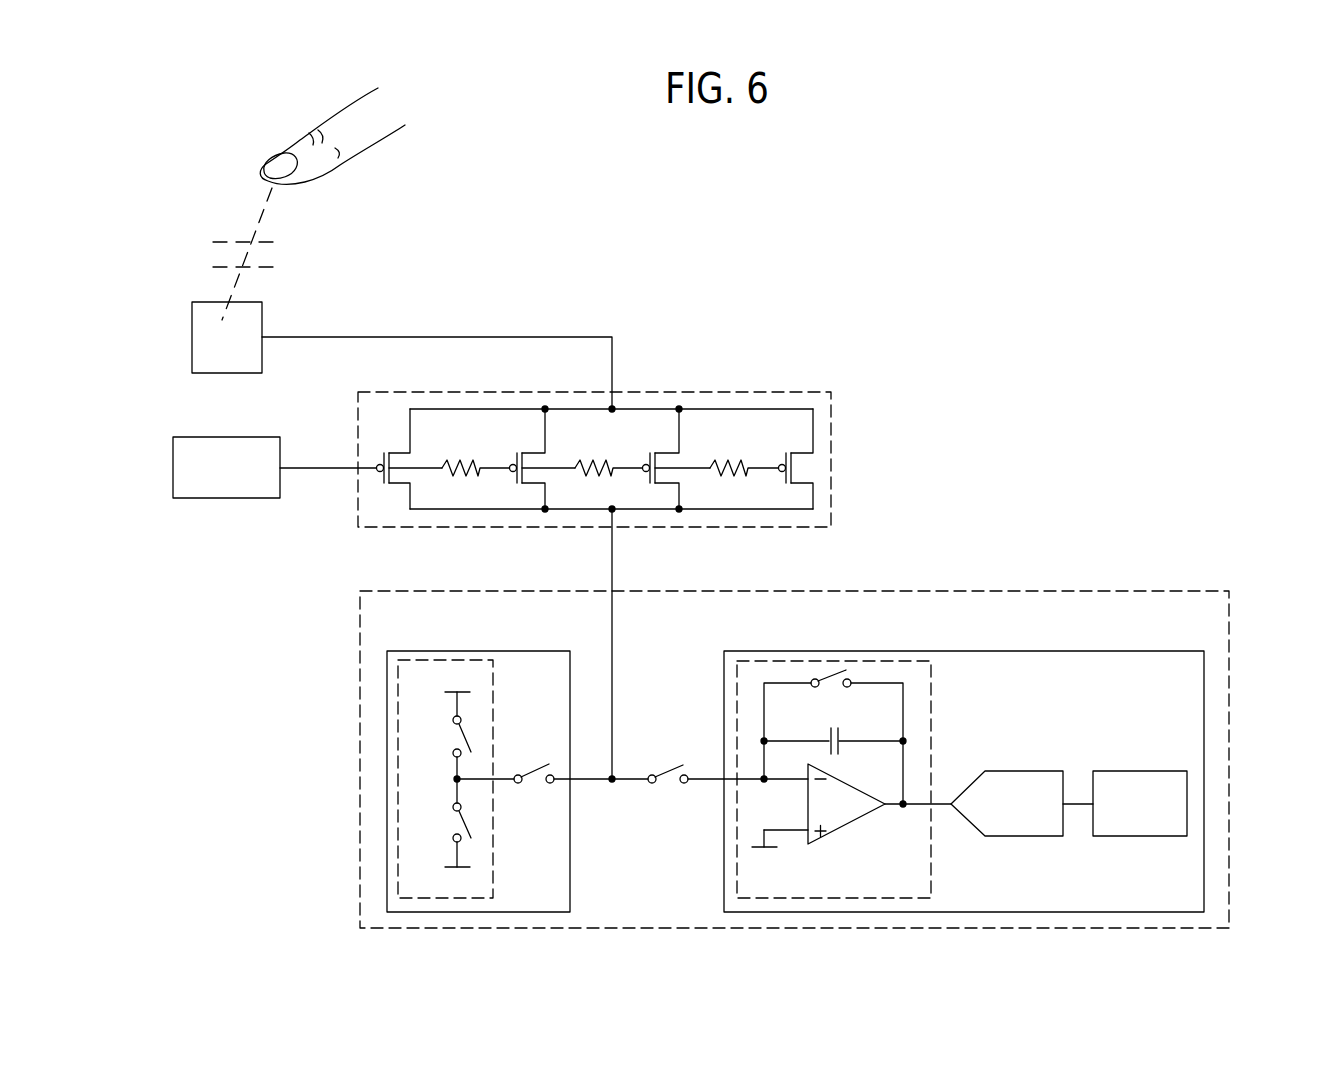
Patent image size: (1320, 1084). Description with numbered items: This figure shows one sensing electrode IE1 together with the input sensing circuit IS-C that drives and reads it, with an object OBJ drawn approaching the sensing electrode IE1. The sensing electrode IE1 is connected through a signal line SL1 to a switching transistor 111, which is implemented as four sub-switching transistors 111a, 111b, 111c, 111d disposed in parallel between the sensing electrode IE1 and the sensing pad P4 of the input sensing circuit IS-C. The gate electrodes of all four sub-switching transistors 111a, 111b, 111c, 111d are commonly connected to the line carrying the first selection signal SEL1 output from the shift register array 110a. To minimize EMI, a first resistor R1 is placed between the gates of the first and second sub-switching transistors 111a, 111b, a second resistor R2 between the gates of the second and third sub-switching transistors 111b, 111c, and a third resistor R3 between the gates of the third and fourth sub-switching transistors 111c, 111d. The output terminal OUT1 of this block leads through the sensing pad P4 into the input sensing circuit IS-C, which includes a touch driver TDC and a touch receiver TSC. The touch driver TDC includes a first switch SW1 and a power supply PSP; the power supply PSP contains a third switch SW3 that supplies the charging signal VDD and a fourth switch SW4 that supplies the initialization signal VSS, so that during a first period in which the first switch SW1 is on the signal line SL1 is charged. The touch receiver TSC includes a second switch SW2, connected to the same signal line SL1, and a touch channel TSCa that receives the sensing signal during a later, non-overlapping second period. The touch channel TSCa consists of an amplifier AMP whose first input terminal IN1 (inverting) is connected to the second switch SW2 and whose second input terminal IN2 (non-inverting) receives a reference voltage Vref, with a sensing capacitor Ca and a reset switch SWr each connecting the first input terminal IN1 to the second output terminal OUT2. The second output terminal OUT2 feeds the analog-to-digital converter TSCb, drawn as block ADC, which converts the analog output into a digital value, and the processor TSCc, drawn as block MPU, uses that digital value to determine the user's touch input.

The object (finger) OBJ is at (264, 176).
The sensing electrode IE1 is at (204, 302).
The signal line SL1 is at (430, 337).
The shift register array 110a is at (226, 467).
The first selection signal SEL1 is at (328, 454).
The switching transistor 111 is at (753, 392).
The first sub-switching transistor 111a is at (404, 459).
The second sub-switching transistor 111b is at (538, 459).
The third sub-switching transistor 111c is at (672, 459).
The fourth sub-switching transistor 111d is at (791, 459).
The first resistor R1 is at (475, 451).
The second resistor R2 is at (608, 451).
The third resistor R3 is at (744, 451).
The output terminal OUT1 is at (614, 512).
The input sensing circuit IS-C is at (1152, 590).
The touch driver TDC is at (522, 651).
The power supply PSP is at (493, 707).
The charging signal VDD is at (457, 690).
The initialization signal VSS is at (457, 881).
The first switch SW1 is at (534, 786).
The second switch SW2 is at (706, 786).
The third switch SW3 is at (446, 759).
The fourth switch SW4 is at (446, 835).
The sensing pad P4 is at (623, 792).
The touch receiver TSC is at (1073, 651).
The touch channel TSCa is at (931, 684).
The analog-to-digital converter TSCb is at (1007, 778).
The processor TSCc is at (1140, 778).
The reset switch SWr is at (833, 737).
The sensing capacitor Ca is at (833, 734).
The first input terminal IN1 is at (784, 767).
The second input terminal IN2 is at (786, 816).
The second output terminal OUT2 is at (914, 818).
The amplifier AMP is at (838, 830).
The reference voltage Vref is at (761, 853).
The analog-digital converter ADC is at (1007, 803).
The micro processor unit MPU is at (1140, 803).